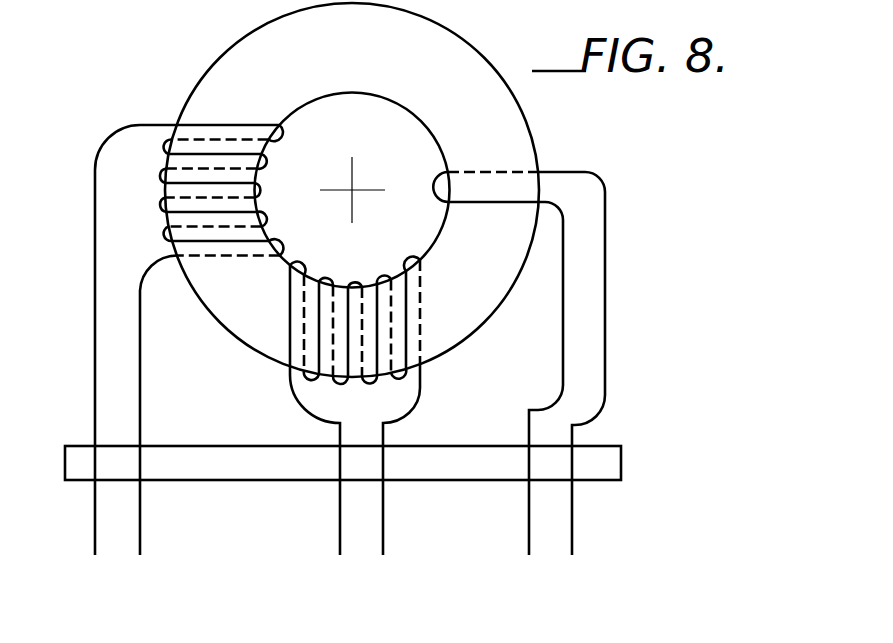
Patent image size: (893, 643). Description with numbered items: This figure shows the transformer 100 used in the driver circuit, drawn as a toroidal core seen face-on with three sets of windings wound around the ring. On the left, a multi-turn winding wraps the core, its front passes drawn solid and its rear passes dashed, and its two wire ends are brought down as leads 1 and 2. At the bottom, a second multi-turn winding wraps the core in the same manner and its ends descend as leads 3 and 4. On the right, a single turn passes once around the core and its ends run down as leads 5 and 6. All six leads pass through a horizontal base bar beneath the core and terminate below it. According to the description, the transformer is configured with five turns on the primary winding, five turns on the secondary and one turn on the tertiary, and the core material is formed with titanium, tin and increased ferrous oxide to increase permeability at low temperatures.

The transformer 100 is at (552, 132).
The lead terminal 1 is at (183, 361).
The lead terminal 2 is at (153, 427).
The lead terminal 3 is at (355, 427).
The lead terminal 4 is at (397, 477).
The lead terminal 5 is at (498, 385).
The lead terminal 6 is at (526, 385).